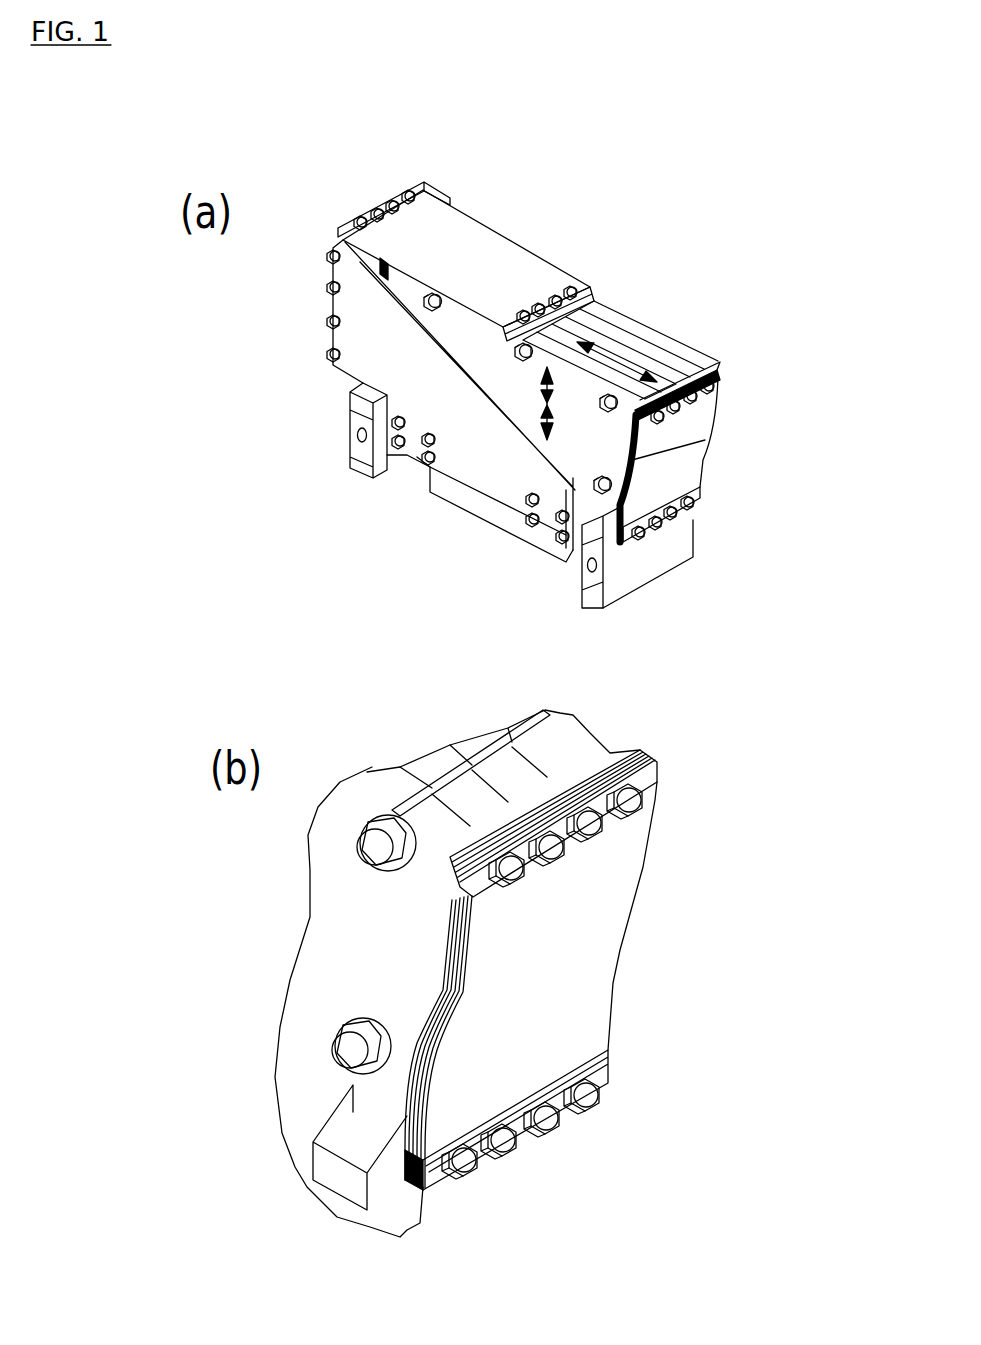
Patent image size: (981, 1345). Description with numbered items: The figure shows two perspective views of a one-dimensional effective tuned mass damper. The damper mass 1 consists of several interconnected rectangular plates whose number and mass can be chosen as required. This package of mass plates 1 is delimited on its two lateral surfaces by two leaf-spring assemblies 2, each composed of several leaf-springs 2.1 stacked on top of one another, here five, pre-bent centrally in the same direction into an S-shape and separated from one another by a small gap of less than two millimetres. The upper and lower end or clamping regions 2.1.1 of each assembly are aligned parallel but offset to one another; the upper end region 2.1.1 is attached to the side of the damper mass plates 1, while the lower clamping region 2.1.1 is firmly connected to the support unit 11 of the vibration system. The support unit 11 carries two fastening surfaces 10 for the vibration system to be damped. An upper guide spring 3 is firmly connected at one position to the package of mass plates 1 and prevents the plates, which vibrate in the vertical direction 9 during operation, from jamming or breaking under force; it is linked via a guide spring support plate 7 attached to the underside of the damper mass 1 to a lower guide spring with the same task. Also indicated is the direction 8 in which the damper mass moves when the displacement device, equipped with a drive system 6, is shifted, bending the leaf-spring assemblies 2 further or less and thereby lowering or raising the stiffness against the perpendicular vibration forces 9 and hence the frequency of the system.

The damper mass 1 is at (630, 335).
The leaf-spring assembly 2 is at (370, 267).
The upper guide spring 3 is at (513, 292).
The drive system 6 is at (453, 497).
The guide spring support plate 7 is at (387, 338).
The displacement direction 8 is at (610, 392).
The vertical vibration direction 9 is at (540, 432).
The fastening surface 10 is at (355, 467).
The support unit 11 is at (388, 458).
The leaf-spring 2.1 is at (450, 947).
The end region 2.1.1 is at (647, 783).